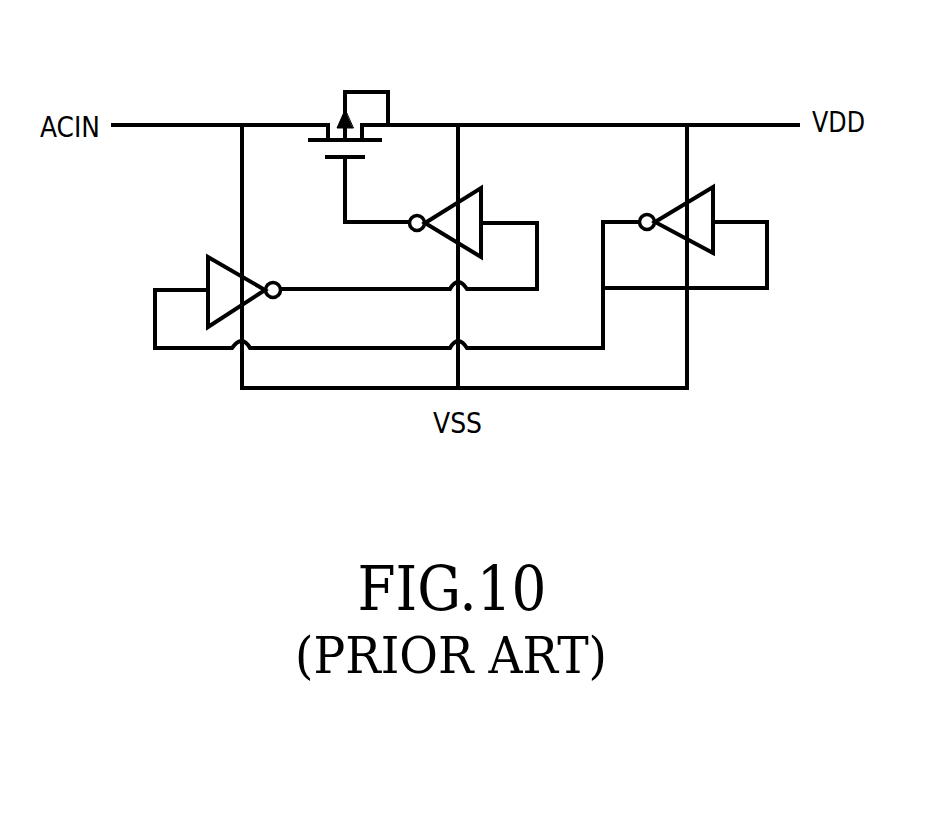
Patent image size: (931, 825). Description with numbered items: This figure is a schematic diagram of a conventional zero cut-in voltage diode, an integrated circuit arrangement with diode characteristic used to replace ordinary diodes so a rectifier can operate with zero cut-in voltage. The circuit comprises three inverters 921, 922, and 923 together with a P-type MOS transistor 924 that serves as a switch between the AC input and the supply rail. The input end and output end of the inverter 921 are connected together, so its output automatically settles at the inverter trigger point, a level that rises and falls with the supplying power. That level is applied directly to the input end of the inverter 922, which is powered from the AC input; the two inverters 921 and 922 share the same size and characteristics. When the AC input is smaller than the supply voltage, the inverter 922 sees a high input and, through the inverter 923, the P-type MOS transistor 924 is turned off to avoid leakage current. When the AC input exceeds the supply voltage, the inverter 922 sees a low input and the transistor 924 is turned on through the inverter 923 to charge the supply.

The inverter 921 is at (723, 192).
The inverter 922 is at (198, 255).
The inverter 923 is at (490, 200).
The P-type MOS transistor 924 is at (370, 77).